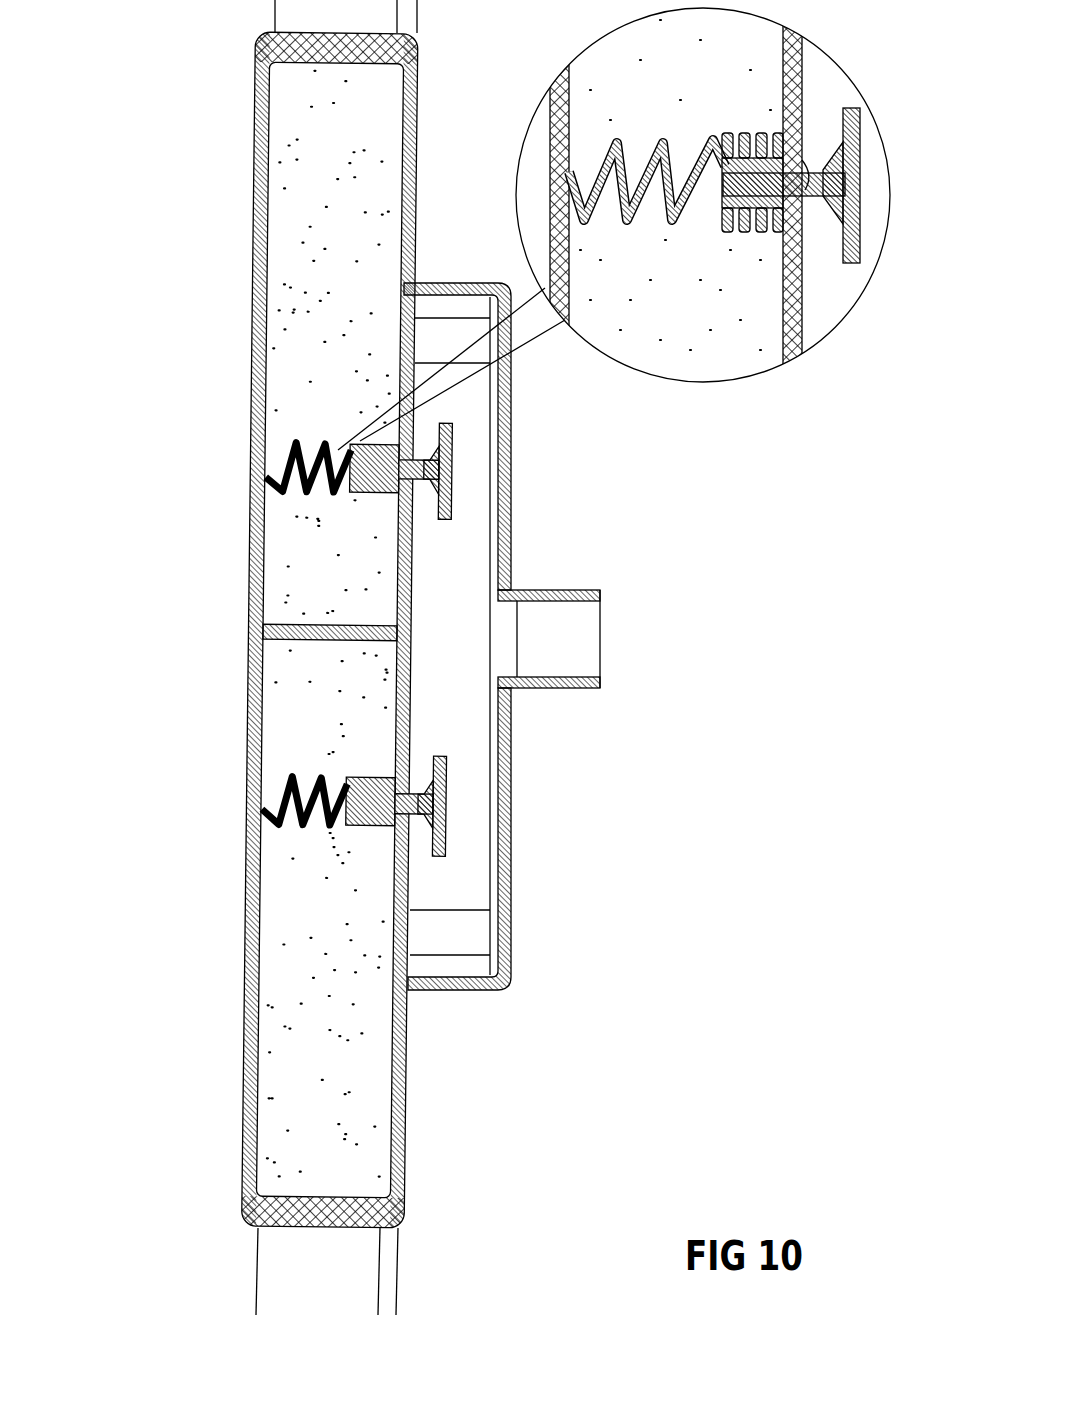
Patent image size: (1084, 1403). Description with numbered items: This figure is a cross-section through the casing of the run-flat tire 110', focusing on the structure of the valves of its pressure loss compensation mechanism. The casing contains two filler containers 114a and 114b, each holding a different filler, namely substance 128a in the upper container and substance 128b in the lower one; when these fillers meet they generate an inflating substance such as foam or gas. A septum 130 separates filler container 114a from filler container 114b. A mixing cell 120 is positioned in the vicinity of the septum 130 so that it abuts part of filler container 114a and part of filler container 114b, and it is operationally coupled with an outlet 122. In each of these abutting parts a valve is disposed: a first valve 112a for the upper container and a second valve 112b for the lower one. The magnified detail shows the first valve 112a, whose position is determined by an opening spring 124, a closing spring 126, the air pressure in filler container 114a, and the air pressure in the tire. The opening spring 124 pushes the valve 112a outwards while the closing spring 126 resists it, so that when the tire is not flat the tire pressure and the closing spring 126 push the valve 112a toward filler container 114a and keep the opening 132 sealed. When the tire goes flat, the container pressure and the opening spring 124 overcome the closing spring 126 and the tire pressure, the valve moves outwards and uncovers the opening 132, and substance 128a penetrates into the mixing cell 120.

The run-flat tire 110' is at (126, 342).
The filler container 114a is at (418, 146).
The filler container 114b is at (405, 1046).
The substance 128a is at (340, 240).
The substance 128b is at (327, 1147).
The first valve 112a is at (452, 464).
The second valve 112b is at (425, 803).
The septum 130 is at (345, 625).
The mixing cell 120 is at (507, 733).
The outlet 122 is at (580, 647).
The opening spring 124 is at (631, 150).
The closing spring 126 is at (768, 148).
The opening 132 is at (805, 158).